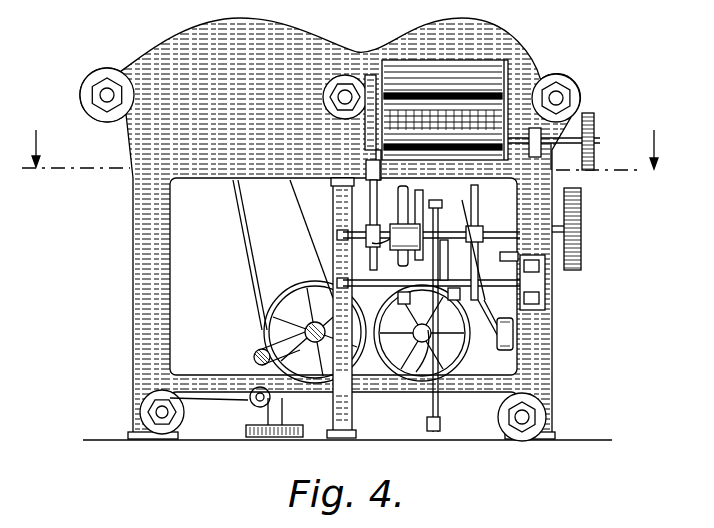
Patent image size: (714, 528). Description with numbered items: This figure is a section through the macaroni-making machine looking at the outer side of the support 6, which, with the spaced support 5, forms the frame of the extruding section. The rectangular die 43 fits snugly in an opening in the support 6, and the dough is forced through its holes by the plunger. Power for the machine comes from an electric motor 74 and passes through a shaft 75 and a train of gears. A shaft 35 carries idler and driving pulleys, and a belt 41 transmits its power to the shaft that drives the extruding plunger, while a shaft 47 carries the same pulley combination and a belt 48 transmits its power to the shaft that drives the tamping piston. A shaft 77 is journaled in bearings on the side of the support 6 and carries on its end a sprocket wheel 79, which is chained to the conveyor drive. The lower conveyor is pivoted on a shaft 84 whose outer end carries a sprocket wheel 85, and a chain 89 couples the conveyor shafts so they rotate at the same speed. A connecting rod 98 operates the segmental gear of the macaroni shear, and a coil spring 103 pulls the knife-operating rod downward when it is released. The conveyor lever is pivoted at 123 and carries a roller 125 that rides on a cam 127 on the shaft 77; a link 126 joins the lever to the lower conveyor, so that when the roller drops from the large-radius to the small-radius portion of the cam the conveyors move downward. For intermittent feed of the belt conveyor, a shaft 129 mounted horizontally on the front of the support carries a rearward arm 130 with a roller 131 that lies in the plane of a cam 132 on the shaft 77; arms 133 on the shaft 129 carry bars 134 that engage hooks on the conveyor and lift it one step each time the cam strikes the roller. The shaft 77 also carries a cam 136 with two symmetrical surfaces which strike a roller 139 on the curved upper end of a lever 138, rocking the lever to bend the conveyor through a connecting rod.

The support 5 is at (342, 150).
The support 6 is at (544, 351).
The shaft 35 is at (416, 372).
The belt 41 is at (482, 250).
The die 43 is at (557, 77).
The shaft 47 is at (285, 329).
The belt 48 is at (240, 229).
The electric motor 74 is at (254, 358).
The shaft 75 is at (245, 412).
The shaft 77 is at (431, 225).
The sprocket wheel 79 is at (582, 213).
The shaft 84 is at (553, 136).
The sprocket wheel 85 is at (595, 133).
The chain 89 is at (373, 54).
The connecting rod 98 is at (505, 199).
The coil spring 103 is at (506, 260).
The pivot 123 is at (352, 203).
The roller 125 is at (352, 186).
The link 126 is at (358, 165).
The cam 127 is at (370, 243).
The shaft 129 is at (489, 315).
The arm 130 is at (447, 265).
The roller 131 is at (338, 256).
The cam 132 is at (409, 197).
The arms 133 is at (498, 330).
The bars 134 is at (546, 303).
The cam 136 is at (424, 209).
The lever 138 is at (439, 247).
The roller 139 is at (421, 223).